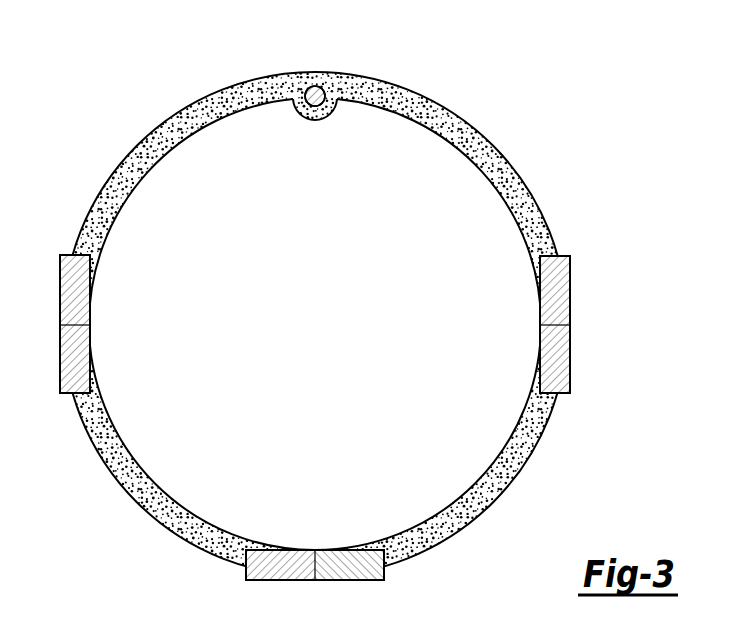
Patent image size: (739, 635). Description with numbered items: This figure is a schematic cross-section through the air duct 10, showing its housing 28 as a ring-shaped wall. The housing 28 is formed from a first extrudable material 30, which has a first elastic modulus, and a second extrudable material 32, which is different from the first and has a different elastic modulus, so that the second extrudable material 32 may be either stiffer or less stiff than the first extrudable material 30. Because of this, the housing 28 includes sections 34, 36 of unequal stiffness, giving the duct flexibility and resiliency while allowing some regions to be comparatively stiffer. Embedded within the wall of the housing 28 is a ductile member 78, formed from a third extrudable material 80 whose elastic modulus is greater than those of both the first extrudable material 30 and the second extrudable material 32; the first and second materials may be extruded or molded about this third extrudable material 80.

The air duct 10 is at (330, 301).
The housing 28 is at (88, 155).
The first extrudable material 30 is at (565, 340).
The second extrudable material 32 is at (512, 176).
The section 34 is at (95, 532).
The section 36 is at (610, 376).
The ductile member 78 is at (304, 89).
The third extrudable material 80 is at (318, 98).